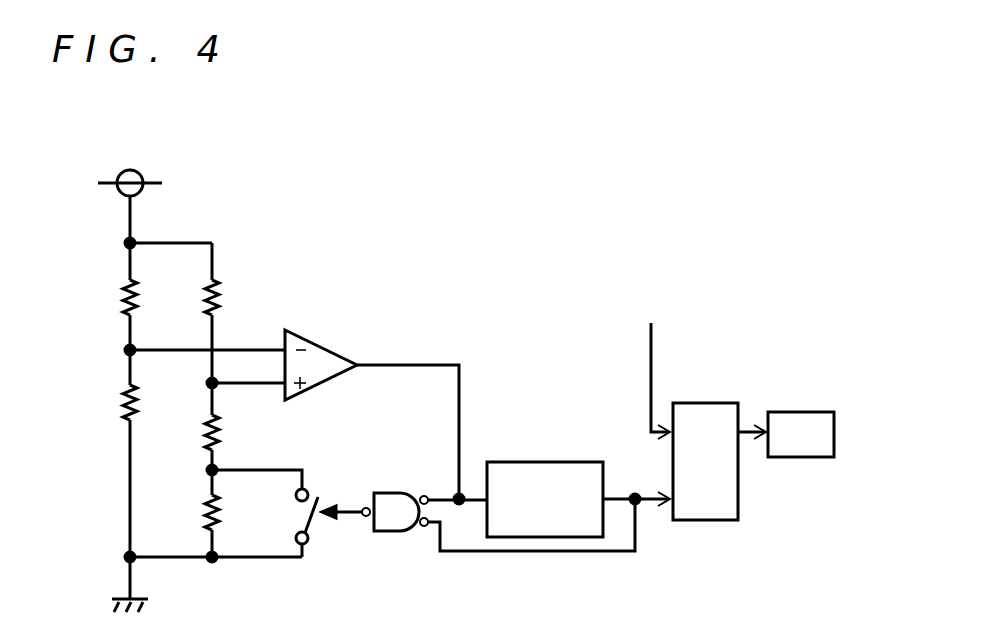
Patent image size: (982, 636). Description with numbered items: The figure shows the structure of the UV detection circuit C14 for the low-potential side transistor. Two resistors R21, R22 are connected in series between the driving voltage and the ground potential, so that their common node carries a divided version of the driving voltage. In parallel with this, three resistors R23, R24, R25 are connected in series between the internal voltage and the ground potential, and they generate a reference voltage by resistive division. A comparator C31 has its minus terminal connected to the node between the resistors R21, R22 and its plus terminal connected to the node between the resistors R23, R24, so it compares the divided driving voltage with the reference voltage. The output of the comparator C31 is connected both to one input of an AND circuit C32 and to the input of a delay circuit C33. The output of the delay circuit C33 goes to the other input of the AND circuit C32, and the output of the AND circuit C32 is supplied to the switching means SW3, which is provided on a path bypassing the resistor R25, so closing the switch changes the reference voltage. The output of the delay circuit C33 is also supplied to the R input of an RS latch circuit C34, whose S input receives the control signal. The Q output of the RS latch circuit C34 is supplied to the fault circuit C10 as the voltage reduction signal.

The UV detection circuit C14 is at (722, 244).
The resistor R21 is at (123, 300).
The resistor R22 is at (123, 405).
The resistor R23 is at (205, 300).
The resistor R24 is at (205, 429).
The resistor R25 is at (205, 513).
The switching means SW3 is at (300, 512).
The comparator C31 is at (323, 345).
The AND circuit C32 is at (400, 493).
The delay circuit C33 is at (547, 462).
The RS latch circuit C34 is at (707, 403).
The fault circuit C10 is at (805, 412).